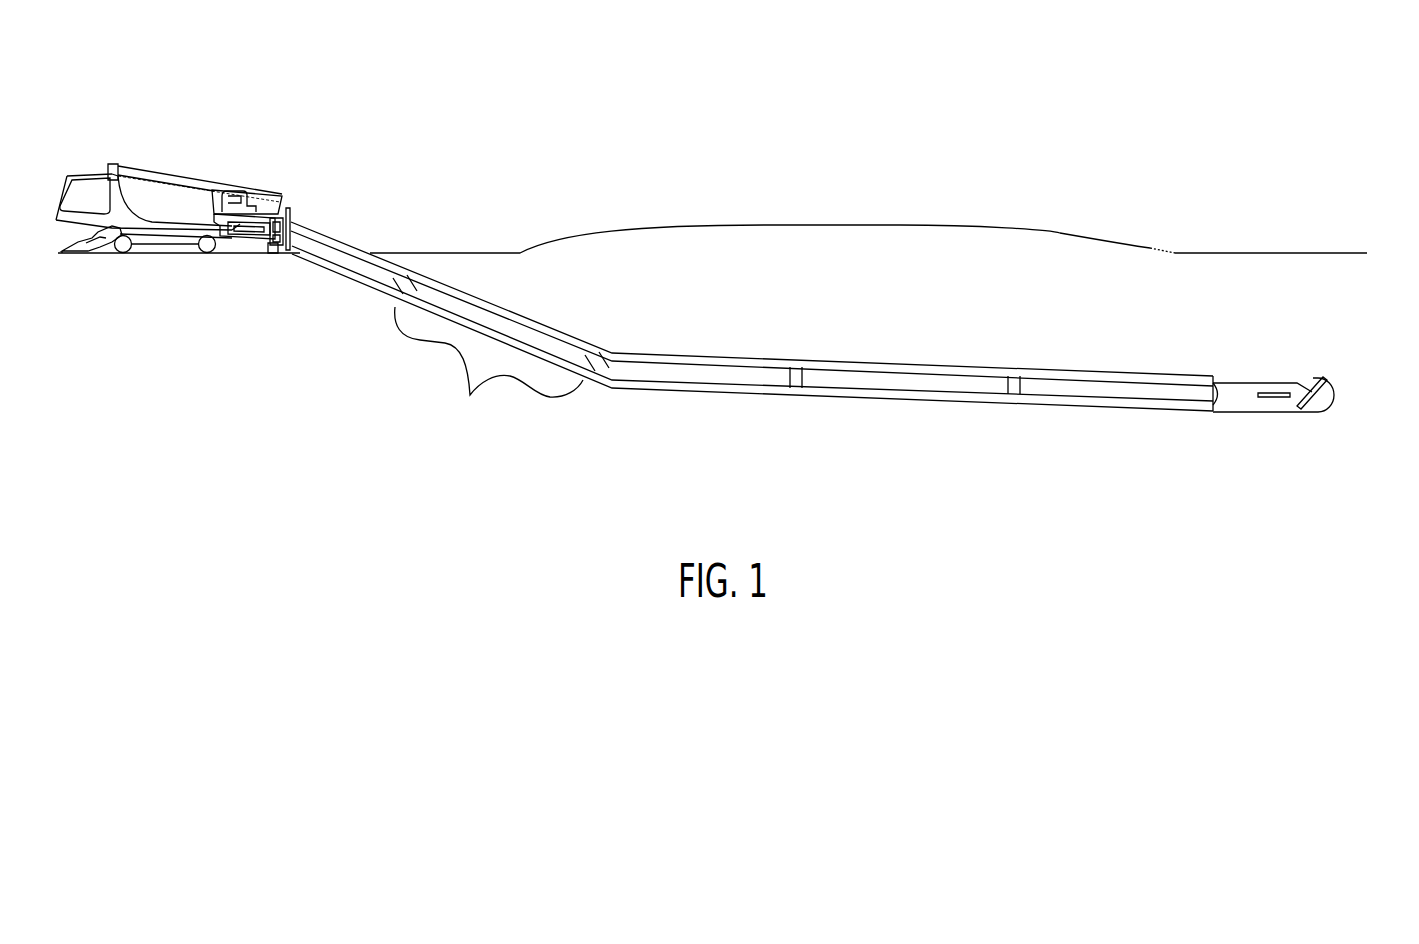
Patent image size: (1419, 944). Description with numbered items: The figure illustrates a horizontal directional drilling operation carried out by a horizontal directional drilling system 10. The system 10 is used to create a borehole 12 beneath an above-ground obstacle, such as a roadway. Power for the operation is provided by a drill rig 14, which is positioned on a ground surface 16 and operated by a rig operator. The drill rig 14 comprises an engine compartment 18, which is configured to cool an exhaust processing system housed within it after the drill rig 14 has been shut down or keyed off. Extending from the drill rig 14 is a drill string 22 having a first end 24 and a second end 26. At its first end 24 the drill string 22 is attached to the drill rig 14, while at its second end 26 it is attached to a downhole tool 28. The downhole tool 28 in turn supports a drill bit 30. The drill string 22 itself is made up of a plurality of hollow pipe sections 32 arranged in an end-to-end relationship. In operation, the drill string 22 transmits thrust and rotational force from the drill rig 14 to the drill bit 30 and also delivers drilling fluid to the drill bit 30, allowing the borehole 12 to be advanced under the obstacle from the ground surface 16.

The horizontal directional drilling system 10 is at (540, 83).
The borehole 12 is at (893, 399).
The drill rig 14 is at (198, 145).
The ground surface 16 is at (462, 252).
The engine compartment 18 is at (90, 188).
The drill string 22 is at (862, 370).
The first end 24 is at (295, 236).
The second end 26 is at (1215, 386).
The downhole tool 28 is at (1235, 398).
The drill bit 30 is at (1306, 410).
The hollow pipe sections 32 is at (489, 370).